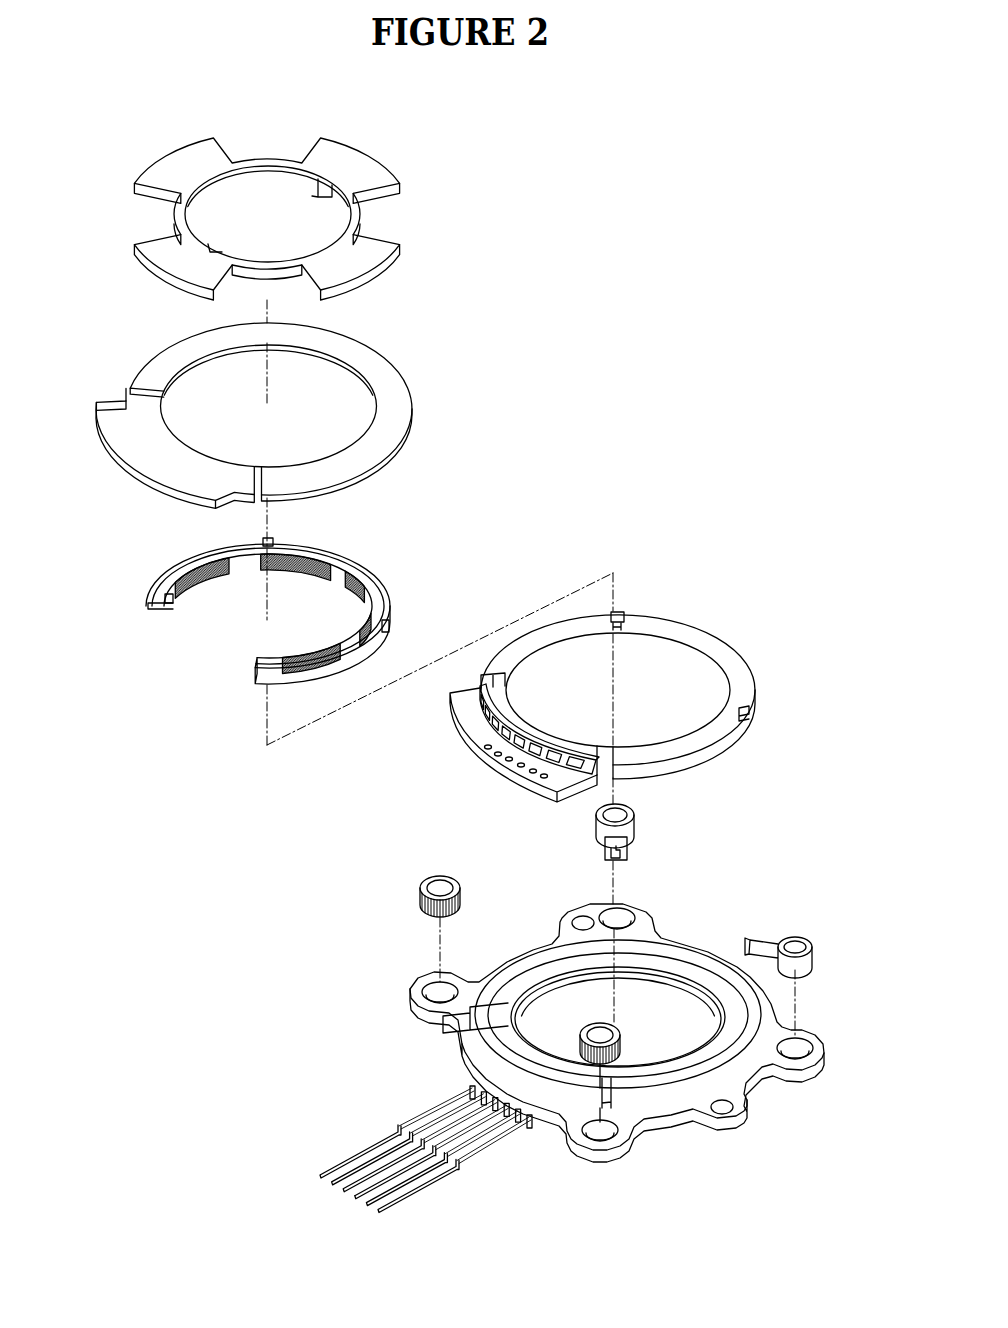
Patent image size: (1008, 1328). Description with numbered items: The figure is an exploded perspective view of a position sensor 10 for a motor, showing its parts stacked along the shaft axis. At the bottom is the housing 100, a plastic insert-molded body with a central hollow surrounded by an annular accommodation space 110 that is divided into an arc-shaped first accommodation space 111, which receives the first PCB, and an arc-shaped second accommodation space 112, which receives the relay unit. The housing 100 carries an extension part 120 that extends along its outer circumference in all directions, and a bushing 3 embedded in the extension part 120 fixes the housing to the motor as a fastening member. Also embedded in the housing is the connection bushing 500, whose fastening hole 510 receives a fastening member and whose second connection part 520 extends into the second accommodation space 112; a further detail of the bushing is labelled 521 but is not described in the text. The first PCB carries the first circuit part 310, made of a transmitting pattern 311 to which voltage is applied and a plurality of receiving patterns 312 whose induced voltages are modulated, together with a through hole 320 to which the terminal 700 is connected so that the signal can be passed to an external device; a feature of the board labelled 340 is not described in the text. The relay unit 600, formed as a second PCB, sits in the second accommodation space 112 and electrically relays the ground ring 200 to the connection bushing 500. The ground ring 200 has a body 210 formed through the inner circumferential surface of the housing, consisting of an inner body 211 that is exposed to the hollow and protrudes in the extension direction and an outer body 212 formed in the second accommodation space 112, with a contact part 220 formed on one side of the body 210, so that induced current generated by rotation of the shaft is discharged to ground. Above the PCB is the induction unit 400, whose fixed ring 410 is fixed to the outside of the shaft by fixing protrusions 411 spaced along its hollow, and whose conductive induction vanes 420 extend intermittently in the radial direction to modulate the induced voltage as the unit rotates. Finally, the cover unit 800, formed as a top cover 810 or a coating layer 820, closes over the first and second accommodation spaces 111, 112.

The position sensor 10 is at (179, 113).
The induction unit 400 is at (328, 208).
The fixed ring 410 is at (357, 214).
The fixing protrusions 411 is at (312, 196).
The induction vanes 420 is at (360, 163).
The cover unit 800 is at (309, 415).
The top cover 810 is at (205, 478).
The coating layer 820 is at (345, 355).
The ground ring 200 is at (251, 645).
The body 210 is at (251, 625).
The inner body 211 is at (190, 635).
The outer body 212 is at (150, 606).
The contact part 220 is at (212, 590).
The relay unit 600 is at (680, 633).
The tab 340 is at (749, 709).
The first circuit part 310 is at (464, 757).
The transmitting pattern 311 is at (480, 718).
The receiving patterns 312 is at (481, 668).
The through hole 320 is at (533, 774).
The connection bushing 500 is at (676, 839).
The fastening hole 510 is at (633, 813).
The second connection part 520 is at (628, 848).
The groove 521 is at (622, 857).
The bushing 3 is at (420, 893).
The terminal 700 is at (363, 1166).
The housing 100 is at (618, 1071).
The accommodation space 110 is at (617, 1065).
The first accommodation space 111 is at (546, 1103).
The second accommodation space 112 is at (637, 1135).
The extension part 120 is at (783, 1059).